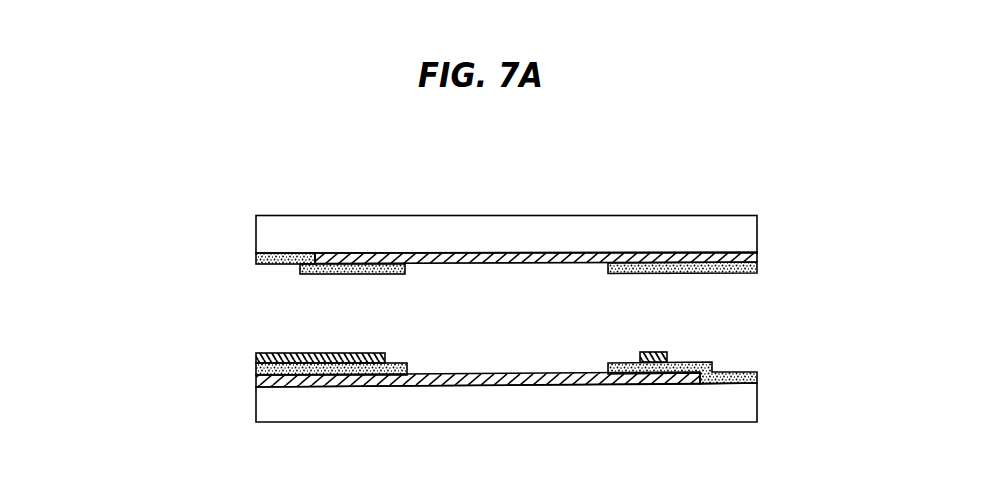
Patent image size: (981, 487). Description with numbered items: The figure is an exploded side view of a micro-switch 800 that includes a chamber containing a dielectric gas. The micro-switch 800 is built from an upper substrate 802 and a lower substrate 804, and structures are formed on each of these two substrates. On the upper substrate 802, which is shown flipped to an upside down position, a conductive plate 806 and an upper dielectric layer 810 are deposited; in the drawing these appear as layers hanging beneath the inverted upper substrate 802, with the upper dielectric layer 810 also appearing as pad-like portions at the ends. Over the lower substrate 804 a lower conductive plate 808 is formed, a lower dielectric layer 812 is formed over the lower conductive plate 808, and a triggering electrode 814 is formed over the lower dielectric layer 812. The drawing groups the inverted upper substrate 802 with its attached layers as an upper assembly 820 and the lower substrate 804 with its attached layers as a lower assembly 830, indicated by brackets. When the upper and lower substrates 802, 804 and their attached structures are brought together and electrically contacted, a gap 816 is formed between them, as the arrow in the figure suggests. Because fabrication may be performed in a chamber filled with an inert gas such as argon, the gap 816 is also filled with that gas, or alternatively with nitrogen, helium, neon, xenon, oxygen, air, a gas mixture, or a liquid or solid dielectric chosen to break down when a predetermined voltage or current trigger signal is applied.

The micro-switch 800 is at (704, 181).
The upper substrate 802 is at (758, 223).
The lower substrate 804 is at (760, 405).
The conductive plate 806 is at (758, 253).
The lower conductive plate 808 is at (257, 380).
The upper dielectric layer 810 is at (256, 258).
The lower dielectric layer 812 is at (257, 370).
The triggering electrode 814 is at (257, 357).
The gap 816 is at (622, 323).
The upper substrate assembly 820 is at (138, 214).
The lower substrate assembly 830 is at (138, 352).